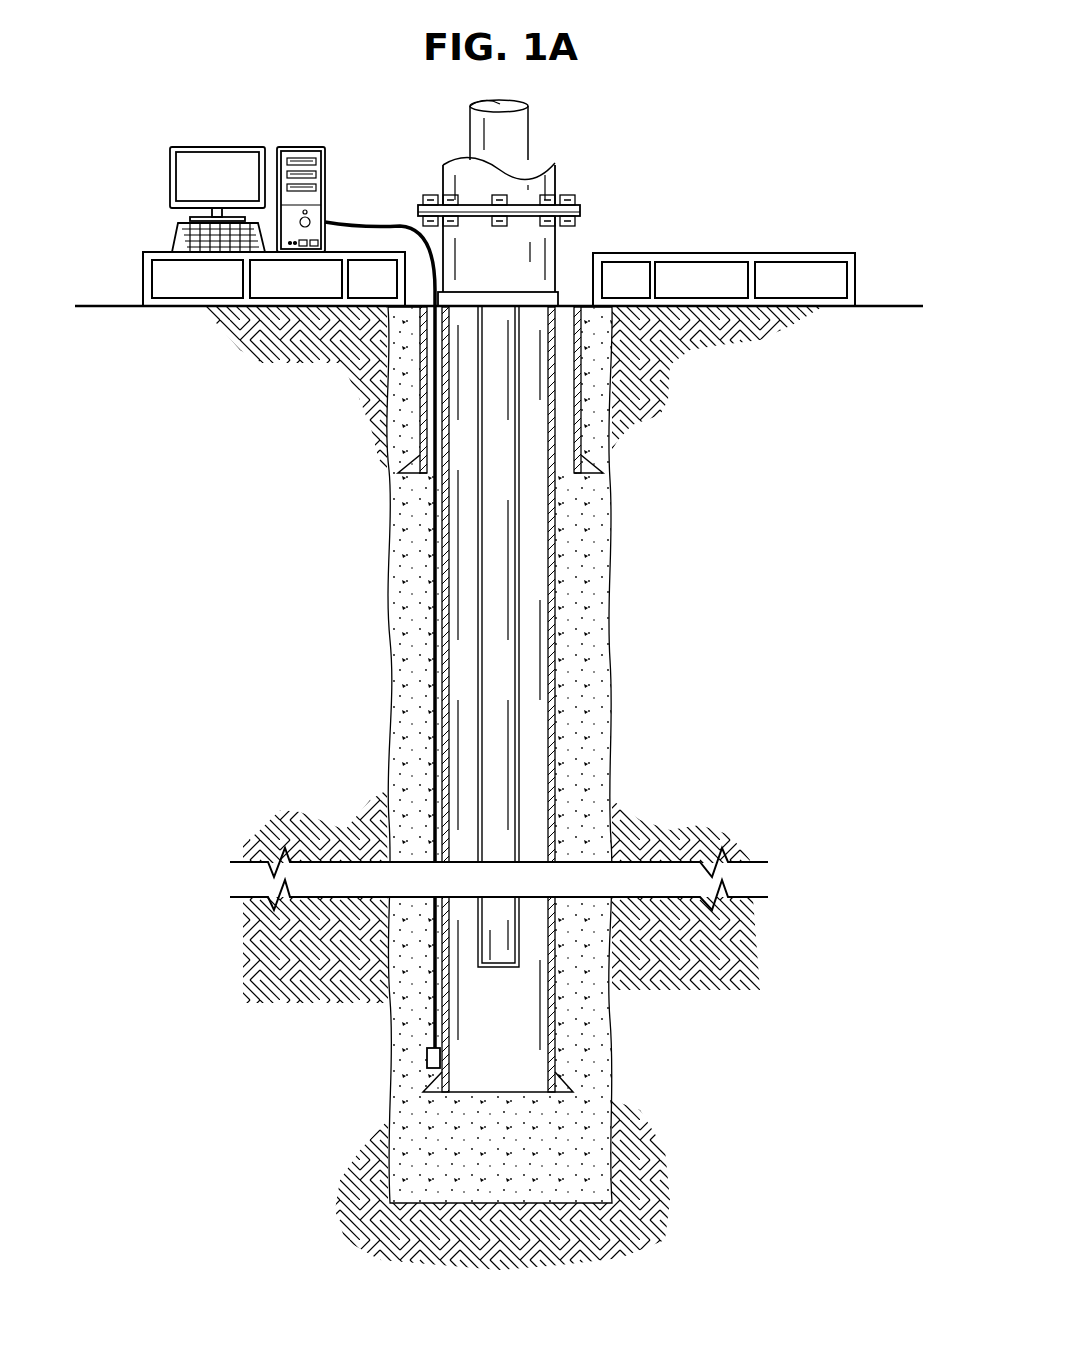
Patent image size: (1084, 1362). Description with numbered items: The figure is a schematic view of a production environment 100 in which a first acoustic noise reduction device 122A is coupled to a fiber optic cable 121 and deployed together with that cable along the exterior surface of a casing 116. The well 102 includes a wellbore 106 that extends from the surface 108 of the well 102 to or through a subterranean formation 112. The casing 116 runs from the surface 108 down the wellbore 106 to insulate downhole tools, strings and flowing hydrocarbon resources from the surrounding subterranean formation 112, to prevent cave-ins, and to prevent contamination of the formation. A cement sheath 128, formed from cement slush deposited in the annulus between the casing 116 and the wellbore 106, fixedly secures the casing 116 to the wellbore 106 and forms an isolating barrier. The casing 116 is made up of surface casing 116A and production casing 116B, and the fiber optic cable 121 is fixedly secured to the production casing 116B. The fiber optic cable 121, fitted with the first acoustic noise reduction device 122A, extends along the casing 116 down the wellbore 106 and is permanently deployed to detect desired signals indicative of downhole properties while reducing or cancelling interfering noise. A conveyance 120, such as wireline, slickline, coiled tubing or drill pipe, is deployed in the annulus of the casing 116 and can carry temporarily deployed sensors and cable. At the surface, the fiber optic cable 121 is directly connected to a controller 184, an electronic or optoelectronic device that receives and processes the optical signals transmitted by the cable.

The production environment 100 is at (297, 64).
The well 102 is at (551, 219).
The wellbore 106 is at (395, 546).
The surface 108 is at (893, 305).
The subterranean formation 112 is at (290, 428).
The casing 116 is at (560, 243).
The surface casing 116A is at (578, 418).
The production casing 116B is at (553, 752).
The conveyance 120 is at (468, 127).
The fiber optic cable 121 is at (382, 222).
The first acoustic noise reduction device 122A is at (427, 1058).
The cement sheath 128 is at (392, 628).
The controller 184 is at (299, 147).